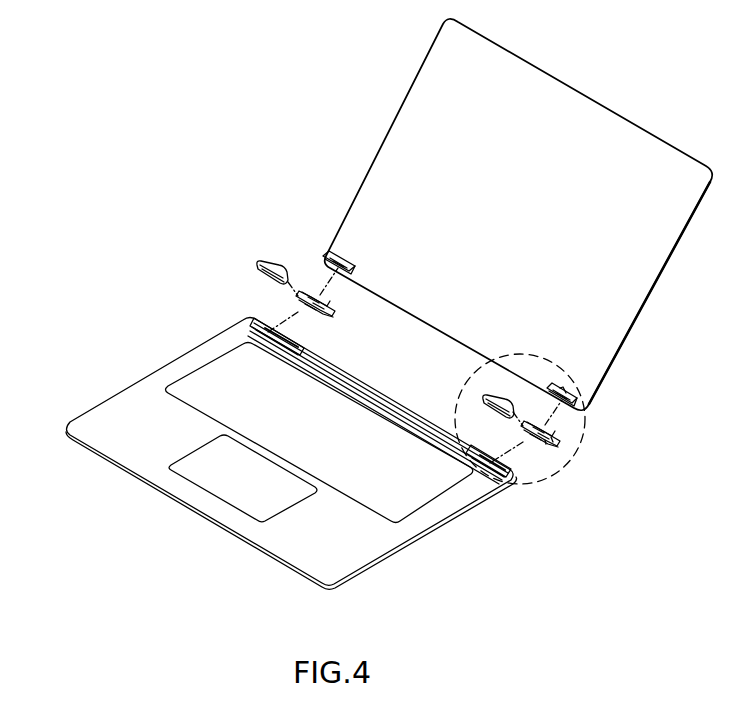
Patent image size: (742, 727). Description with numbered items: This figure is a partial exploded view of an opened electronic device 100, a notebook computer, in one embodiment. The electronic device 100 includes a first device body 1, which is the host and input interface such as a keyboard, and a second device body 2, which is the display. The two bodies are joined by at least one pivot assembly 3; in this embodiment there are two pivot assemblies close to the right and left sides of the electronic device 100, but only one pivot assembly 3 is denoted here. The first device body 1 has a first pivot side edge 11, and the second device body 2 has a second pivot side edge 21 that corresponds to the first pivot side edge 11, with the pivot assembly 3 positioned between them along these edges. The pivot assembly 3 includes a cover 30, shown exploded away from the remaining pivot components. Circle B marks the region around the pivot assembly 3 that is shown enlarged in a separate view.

The electronic device 100 is at (148, 262).
The first device body 1 is at (407, 540).
The second device body 2 is at (598, 123).
The pivot assembly 3 is at (558, 441).
The first pivot side edge 11 is at (514, 478).
The second pivot side edge 21 is at (579, 417).
The cover 30 is at (483, 401).
The circle B is at (512, 481).